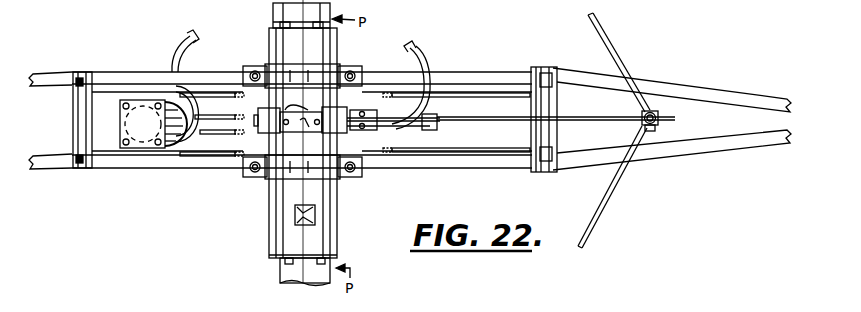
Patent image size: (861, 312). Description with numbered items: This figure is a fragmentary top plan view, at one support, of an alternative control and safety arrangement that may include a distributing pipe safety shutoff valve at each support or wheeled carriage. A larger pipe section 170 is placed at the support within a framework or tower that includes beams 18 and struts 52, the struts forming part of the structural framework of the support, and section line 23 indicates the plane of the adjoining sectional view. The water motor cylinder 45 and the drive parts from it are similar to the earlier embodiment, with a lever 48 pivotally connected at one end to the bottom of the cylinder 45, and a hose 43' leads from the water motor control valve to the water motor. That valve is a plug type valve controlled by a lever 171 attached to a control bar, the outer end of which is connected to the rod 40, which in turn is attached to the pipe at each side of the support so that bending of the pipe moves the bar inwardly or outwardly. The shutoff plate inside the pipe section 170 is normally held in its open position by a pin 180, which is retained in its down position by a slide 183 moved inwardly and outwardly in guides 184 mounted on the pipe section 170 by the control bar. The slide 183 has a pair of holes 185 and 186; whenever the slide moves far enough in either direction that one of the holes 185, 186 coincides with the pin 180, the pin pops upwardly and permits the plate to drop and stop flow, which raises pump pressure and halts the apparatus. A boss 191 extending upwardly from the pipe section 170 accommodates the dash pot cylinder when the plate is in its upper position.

The beams 18 is at (465, 72).
The section line 23 is at (285, 12).
The control rod 40 is at (608, 55).
The hose 43' is at (289, 83).
The water motor cylinder 45 is at (163, 158).
The lever 48 is at (205, 117).
The struts 52 is at (193, 93).
The pipe section 170 is at (337, 234).
The lever 171 is at (425, 133).
The pin 180 is at (301, 132).
The slide 183 is at (320, 112).
The guides 184 is at (262, 130).
The hole 185 is at (262, 112).
The hole 186 is at (332, 70).
The boss 191 is at (297, 216).